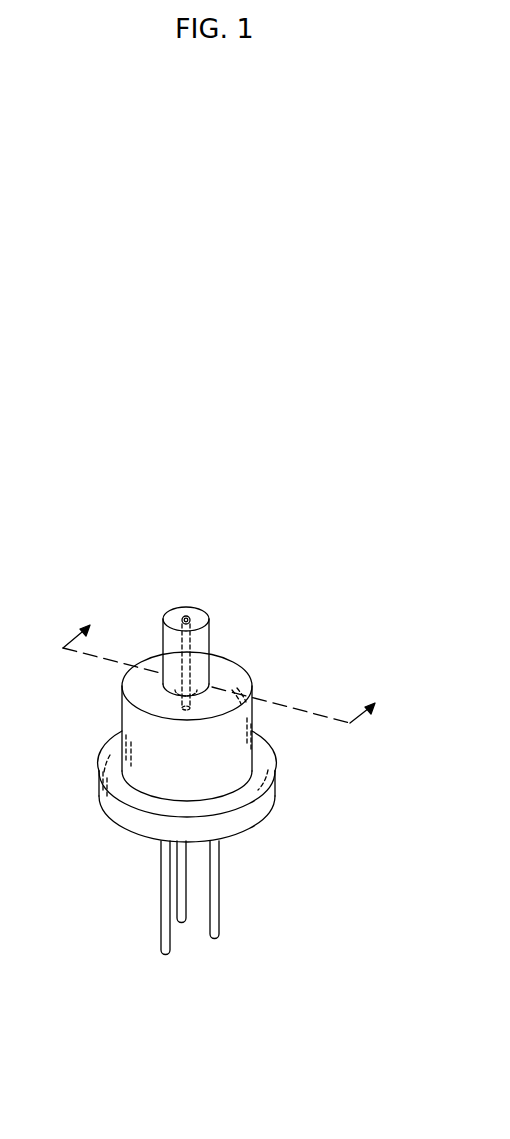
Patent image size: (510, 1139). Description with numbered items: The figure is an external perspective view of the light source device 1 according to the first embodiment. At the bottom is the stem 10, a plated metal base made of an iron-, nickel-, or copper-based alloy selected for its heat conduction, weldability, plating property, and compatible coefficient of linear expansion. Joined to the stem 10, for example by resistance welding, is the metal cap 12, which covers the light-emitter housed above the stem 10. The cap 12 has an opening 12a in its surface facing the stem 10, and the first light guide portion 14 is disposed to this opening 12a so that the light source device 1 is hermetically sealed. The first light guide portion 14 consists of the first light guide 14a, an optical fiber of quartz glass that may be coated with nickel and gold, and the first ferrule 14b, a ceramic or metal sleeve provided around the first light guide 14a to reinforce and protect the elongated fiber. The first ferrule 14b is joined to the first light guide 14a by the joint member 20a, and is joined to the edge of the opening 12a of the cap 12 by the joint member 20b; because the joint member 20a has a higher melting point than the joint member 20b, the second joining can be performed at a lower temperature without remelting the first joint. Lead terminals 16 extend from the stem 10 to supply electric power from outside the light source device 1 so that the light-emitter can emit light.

The light source device 1 is at (315, 496).
The stem 10 is at (262, 800).
The cap 12 is at (147, 731).
The opening 12a is at (160, 690).
The first light guide portion 14 is at (296, 580).
The first light guide 14a is at (196, 617).
The first ferrule 14b is at (203, 661).
The lead terminal 16 is at (160, 922).
The joint member 20a is at (182, 617).
The joint member 20b is at (208, 684).